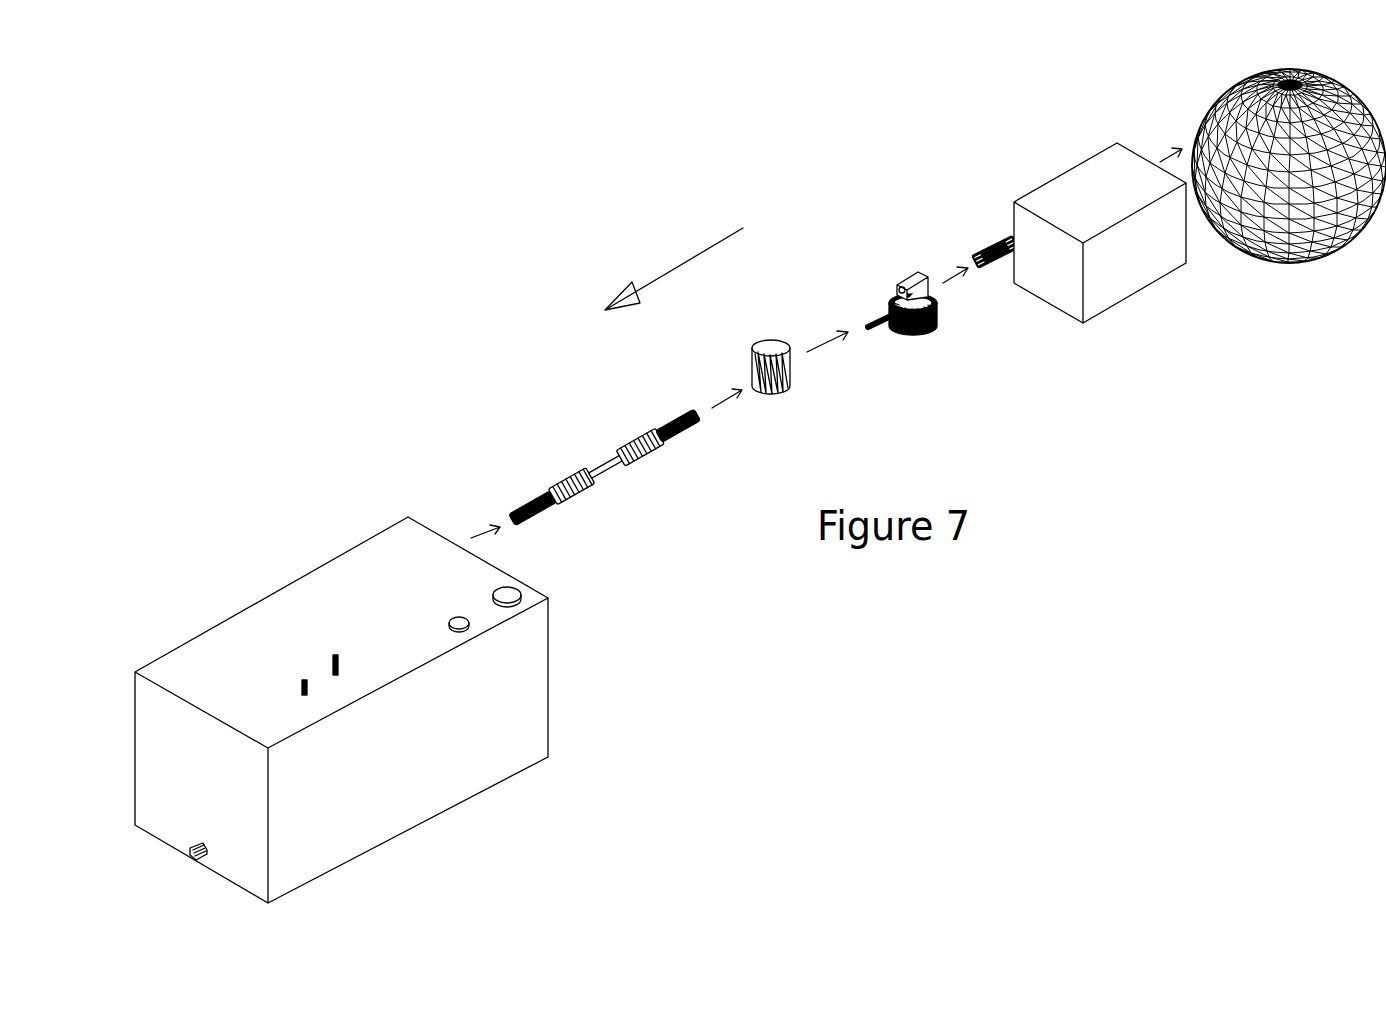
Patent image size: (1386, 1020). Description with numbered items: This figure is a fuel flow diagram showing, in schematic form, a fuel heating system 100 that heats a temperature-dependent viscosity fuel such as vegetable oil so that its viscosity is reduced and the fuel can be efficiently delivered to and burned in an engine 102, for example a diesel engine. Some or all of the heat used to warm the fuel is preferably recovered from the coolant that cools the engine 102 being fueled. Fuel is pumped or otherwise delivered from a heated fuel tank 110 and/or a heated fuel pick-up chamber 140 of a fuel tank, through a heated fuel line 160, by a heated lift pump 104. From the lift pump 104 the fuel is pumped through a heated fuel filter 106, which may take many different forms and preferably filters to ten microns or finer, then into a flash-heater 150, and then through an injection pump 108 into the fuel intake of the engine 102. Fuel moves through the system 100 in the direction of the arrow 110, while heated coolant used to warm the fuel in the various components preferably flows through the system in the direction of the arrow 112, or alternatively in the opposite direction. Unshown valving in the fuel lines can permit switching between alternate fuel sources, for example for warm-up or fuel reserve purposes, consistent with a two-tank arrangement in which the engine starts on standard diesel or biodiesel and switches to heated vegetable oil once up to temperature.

The fuel heating system 100 is at (342, 190).
The engine 102 is at (1247, 78).
The heated lift pump 104 is at (778, 390).
The heated fuel filter 106 is at (910, 280).
The injection pump 108 is at (1132, 284).
The heated fuel tank 110 is at (342, 567).
The arrow indicating coolant flow direction 112 is at (678, 263).
The heated fuel pick-up chamber 140 is at (315, 875).
The flash-heater 150 is at (997, 242).
The heated fuel line 160 is at (600, 463).